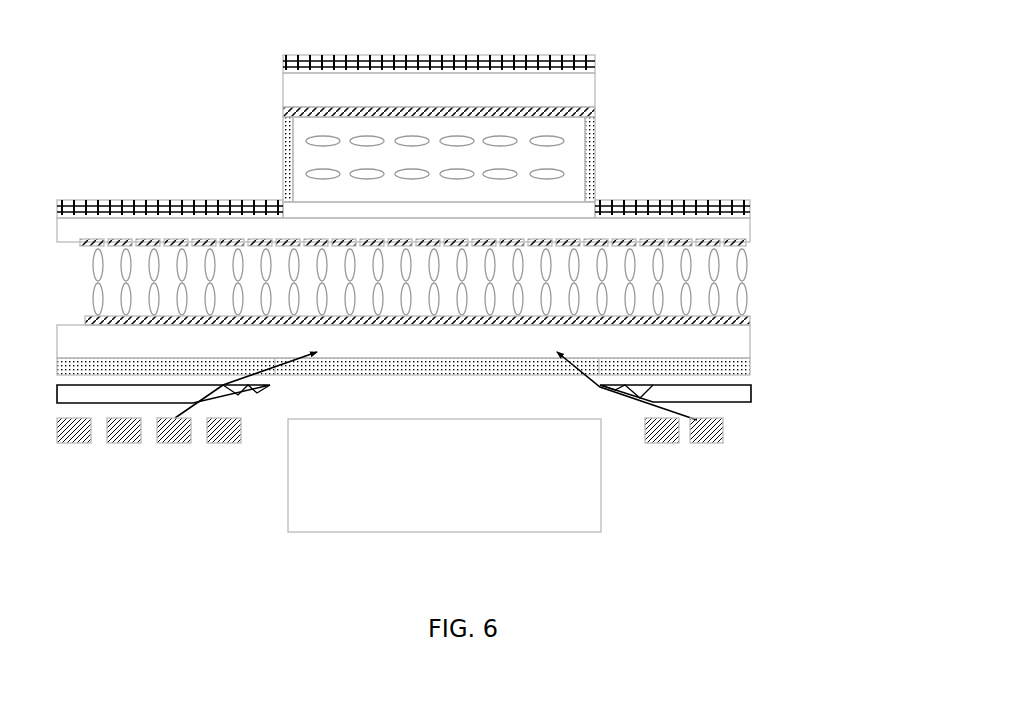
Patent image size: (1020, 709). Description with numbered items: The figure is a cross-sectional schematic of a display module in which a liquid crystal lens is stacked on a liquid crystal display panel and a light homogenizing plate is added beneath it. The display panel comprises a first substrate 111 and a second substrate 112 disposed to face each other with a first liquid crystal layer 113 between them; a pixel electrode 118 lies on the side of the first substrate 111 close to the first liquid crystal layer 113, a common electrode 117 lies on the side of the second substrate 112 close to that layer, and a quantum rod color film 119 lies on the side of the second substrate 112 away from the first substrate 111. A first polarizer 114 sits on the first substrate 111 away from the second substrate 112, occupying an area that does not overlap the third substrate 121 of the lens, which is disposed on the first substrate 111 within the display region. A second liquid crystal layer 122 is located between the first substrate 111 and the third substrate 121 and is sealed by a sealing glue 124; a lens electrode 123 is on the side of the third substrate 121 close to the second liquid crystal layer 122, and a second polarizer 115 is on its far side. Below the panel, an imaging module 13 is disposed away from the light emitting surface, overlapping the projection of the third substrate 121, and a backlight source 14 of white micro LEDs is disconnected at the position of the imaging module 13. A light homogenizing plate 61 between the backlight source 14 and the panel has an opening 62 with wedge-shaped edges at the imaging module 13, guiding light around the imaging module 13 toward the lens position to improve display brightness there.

The second polarizer 115 is at (597, 66).
The third substrate 121 is at (597, 93).
The lens electrode 123 is at (597, 113).
The sealing glue 124 is at (597, 168).
The second liquid crystal layer 122 is at (337, 158).
The first polarizer 114 is at (752, 208).
The first substrate 111 is at (752, 228).
The pixel electrode 118 is at (748, 244).
The first liquid crystal layer 113 is at (750, 287).
The common electrode 117 is at (752, 320).
The second substrate 112 is at (752, 347).
The quantum rod color film 119 is at (752, 367).
The light homogenizing plate 61 is at (752, 394).
The opening 62 is at (393, 392).
The backlight source 14 is at (725, 430).
The imaging module 13 is at (575, 487).